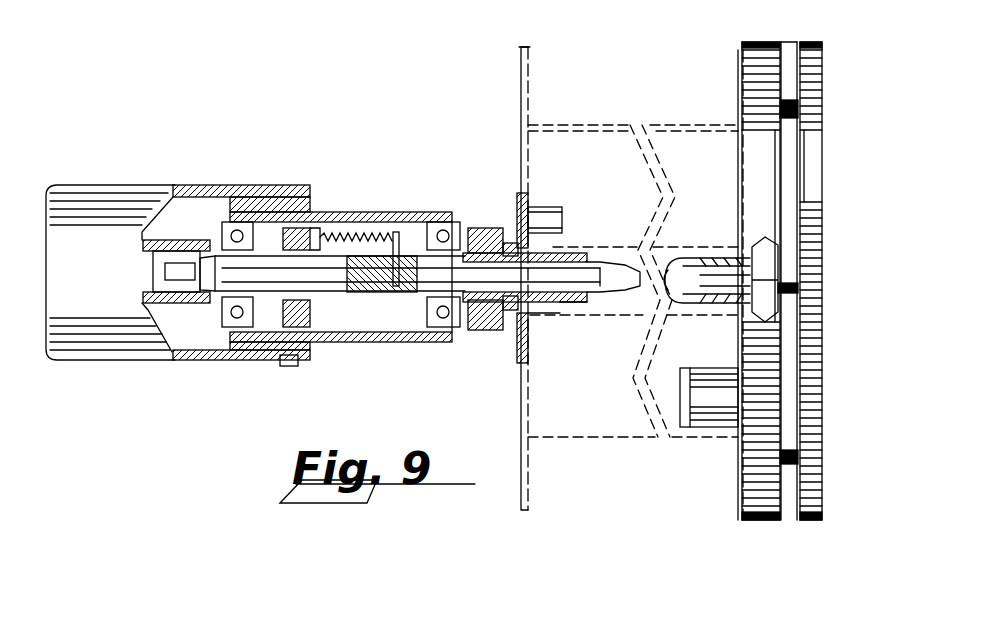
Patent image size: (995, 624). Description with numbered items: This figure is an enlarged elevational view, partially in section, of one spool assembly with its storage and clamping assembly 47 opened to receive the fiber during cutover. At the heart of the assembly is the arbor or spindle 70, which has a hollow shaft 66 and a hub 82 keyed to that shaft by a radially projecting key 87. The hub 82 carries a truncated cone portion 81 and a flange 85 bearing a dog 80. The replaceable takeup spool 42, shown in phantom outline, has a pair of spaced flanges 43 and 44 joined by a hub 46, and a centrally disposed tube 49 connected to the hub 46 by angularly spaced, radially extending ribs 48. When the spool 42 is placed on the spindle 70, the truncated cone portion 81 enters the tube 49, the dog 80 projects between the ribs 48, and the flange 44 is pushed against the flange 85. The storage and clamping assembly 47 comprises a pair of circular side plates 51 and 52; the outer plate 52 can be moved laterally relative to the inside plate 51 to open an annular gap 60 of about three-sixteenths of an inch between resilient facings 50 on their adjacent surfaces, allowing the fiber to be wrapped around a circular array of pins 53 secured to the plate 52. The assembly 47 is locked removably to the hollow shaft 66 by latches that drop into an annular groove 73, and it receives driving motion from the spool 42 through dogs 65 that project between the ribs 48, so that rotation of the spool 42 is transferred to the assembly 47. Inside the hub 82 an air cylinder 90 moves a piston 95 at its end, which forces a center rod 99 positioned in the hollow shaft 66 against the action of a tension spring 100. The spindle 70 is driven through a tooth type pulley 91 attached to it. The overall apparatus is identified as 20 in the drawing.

The drive shaft assembly 20 is at (505, 345).
The takeup spool 42 is at (518, 494).
The flange 43 is at (738, 97).
The flange 44 is at (525, 46).
The hub 46 is at (570, 125).
The storage and clamping assembly 47 is at (813, 524).
The ribs 48 is at (545, 163).
The tube 49 is at (708, 245).
The facings 50 is at (772, 520).
The side plate 51 is at (750, 523).
The side plate 52 is at (788, 514).
The pins 53 is at (800, 130).
The annular gap 60 is at (790, 50).
The dogs 65 is at (694, 437).
The hollow shaft 66 is at (617, 296).
The spindle 70 is at (538, 322).
The annular groove 73 is at (778, 260).
The dog 80 is at (538, 200).
The truncated cone portion 81 is at (567, 315).
The hub 82 is at (262, 184).
The flange 85 is at (518, 364).
The key 87 is at (473, 338).
The air cylinder 90 is at (162, 240).
The tooth type pulley 91 is at (480, 222).
The piston 95 is at (198, 248).
The center rod 99 is at (568, 268).
The tension spring 100 is at (330, 232).